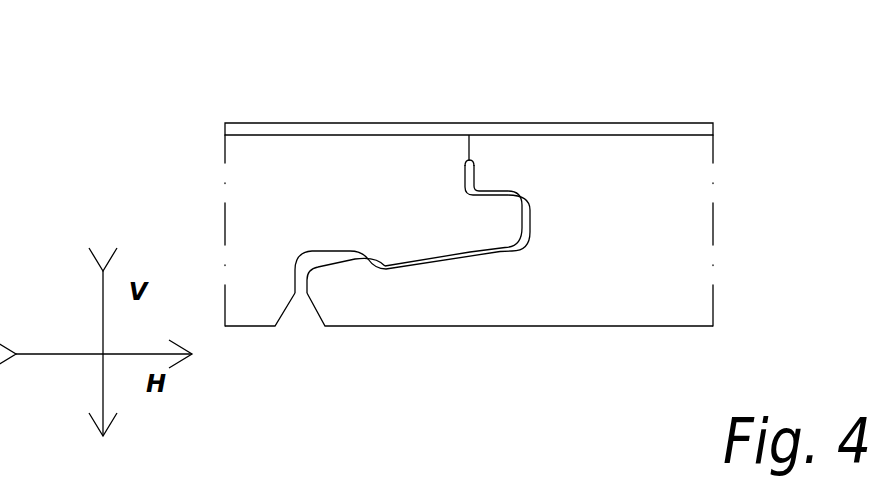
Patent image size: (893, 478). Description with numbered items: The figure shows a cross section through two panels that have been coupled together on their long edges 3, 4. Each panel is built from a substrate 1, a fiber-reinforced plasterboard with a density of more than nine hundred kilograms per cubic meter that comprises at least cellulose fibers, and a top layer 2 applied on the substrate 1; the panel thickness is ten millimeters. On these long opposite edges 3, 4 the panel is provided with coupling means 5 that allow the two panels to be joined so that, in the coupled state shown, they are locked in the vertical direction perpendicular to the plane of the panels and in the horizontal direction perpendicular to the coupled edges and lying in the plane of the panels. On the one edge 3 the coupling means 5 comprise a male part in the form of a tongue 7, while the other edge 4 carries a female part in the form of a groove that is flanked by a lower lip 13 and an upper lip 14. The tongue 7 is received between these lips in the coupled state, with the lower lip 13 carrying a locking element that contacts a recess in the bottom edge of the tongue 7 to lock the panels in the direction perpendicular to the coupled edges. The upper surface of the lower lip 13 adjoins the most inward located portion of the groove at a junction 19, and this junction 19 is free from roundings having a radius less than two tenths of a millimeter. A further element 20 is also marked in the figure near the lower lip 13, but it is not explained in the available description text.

The panel 1 is at (270, 193).
The top plate 2 is at (262, 126).
The upper assembly 3 is at (300, 70).
The fastening system 4 is at (677, 93).
The lower assembly 5 is at (303, 361).
The hook 7 is at (476, 219).
The bottom plate 13 is at (440, 300).
The stem 14 is at (529, 163).
The bend contact point 19 is at (524, 248).
The spring clip 20 is at (338, 283).